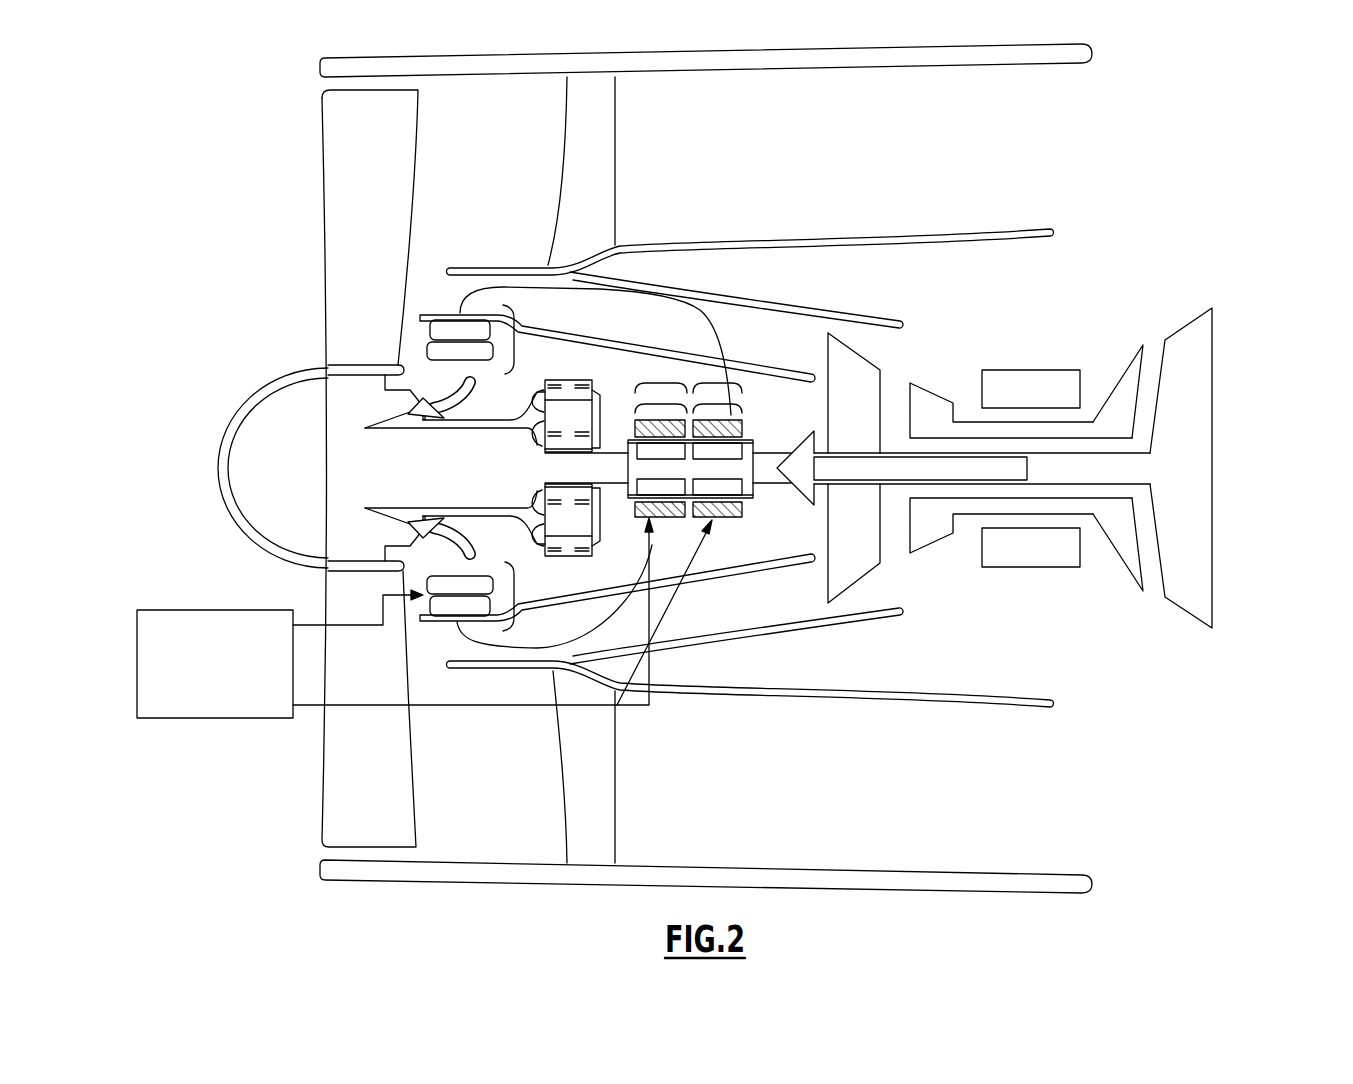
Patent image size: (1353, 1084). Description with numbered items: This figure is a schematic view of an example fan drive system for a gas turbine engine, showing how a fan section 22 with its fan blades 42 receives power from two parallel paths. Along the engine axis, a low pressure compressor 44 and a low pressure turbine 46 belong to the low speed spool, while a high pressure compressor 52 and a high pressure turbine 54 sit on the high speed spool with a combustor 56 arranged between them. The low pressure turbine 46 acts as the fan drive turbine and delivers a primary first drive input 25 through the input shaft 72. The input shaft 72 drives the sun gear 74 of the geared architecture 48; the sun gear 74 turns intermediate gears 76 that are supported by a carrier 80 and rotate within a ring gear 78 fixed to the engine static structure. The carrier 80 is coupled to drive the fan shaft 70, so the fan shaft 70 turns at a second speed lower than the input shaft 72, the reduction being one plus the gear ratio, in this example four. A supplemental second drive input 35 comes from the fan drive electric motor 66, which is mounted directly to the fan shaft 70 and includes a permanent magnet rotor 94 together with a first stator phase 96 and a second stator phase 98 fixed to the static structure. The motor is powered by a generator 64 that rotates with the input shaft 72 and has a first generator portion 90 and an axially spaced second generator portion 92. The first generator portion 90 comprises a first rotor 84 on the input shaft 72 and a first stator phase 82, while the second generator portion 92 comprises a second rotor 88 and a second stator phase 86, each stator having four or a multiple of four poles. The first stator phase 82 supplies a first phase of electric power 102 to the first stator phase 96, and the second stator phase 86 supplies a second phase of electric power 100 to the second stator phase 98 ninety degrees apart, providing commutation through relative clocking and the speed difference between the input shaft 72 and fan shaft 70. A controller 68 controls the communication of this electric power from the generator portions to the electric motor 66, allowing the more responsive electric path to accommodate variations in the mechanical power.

The fan section 22 is at (262, 336).
The first drive input 25 is at (1020, 468).
The second drive input 35 is at (436, 468).
The fan blades 42 is at (378, 197).
The low pressure compressor 44 is at (866, 369).
The low pressure turbine 46 is at (1198, 346).
The geared architecture 48 is at (618, 543).
The high pressure compressor 52 is at (920, 404).
The high pressure turbine 54 is at (1128, 376).
The combustor 56 is at (1015, 382).
The generator 64 is at (702, 352).
The fan drive electric motor 66 is at (520, 334).
The controller 68 is at (230, 692).
The fan shaft 70 is at (449, 511).
The input shaft 72 is at (753, 493).
The sun gear 74 is at (544, 450).
The intermediate gears 76 is at (530, 429).
The ring gear 78 is at (560, 398).
The carrier 80 is at (595, 420).
The first stator phase 82 is at (725, 513).
The first rotor 84 is at (735, 452).
The second stator phase 86 is at (676, 510).
The second rotor 88 is at (660, 448).
The first generator portion 90 is at (658, 404).
The second generator portion 92 is at (722, 397).
The permanent magnet rotor 94 is at (473, 588).
The first stator phase 96 is at (446, 332).
The second stator phase 98 is at (440, 606).
The second phase of electric power 100 is at (538, 650).
The first phase of electric power 102 is at (680, 305).